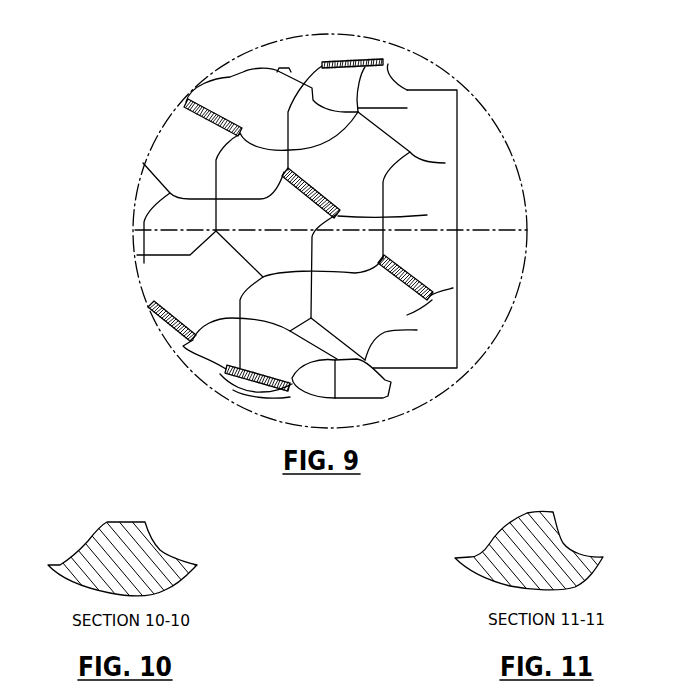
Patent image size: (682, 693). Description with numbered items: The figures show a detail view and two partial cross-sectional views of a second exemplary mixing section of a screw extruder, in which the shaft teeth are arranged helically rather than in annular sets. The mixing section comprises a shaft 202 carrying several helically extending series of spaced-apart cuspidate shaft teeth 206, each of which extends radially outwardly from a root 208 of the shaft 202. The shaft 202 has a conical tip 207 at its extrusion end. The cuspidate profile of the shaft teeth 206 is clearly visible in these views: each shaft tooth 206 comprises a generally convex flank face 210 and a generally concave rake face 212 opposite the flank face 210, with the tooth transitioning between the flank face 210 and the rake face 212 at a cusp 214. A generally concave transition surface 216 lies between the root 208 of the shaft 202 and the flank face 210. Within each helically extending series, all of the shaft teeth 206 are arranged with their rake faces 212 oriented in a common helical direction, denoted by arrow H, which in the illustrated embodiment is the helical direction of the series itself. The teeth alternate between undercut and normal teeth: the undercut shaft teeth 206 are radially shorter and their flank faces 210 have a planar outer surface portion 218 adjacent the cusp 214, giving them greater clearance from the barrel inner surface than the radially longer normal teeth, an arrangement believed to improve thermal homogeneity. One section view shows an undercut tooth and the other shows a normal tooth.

In FIG. 9, the shaft 202 is at (468, 122).
In FIG. 9, the shaft tooth 206 is at (393, 102).
In FIG. 10, the shaft tooth 206 is at (107, 538).
In FIG. 11, the shaft tooth 206 is at (527, 527).
In FIG. 9, the conical tip 207 is at (512, 238).
In FIG. 9, the root 208 is at (437, 86).
In FIG. 10, the root 208 is at (180, 567).
In FIG. 11, the root 208 is at (590, 560).
In FIG. 9, the flank face 210 is at (323, 66).
In FIG. 10, the flank face 210 is at (73, 551).
In FIG. 11, the flank face 210 is at (502, 529).
In FIG. 9, the rake face 212 is at (390, 83).
In FIG. 10, the rake face 212 is at (156, 547).
In FIG. 11, the rake face 212 is at (566, 544).
In FIG. 9, the cusp 214 is at (396, 55).
In FIG. 10, the cusp 214 is at (151, 506).
In FIG. 11, the cusp 214 is at (568, 500).
In FIG. 10, the transition surface 216 is at (67, 559).
In FIG. 11, the transition surface 216 is at (477, 558).
In FIG. 9, the planar outer surface portion 218 is at (388, 62).
In FIG. 10, the planar outer surface portion 218 is at (133, 522).
In FIG. 9, the common helical direction H is at (580, 204).